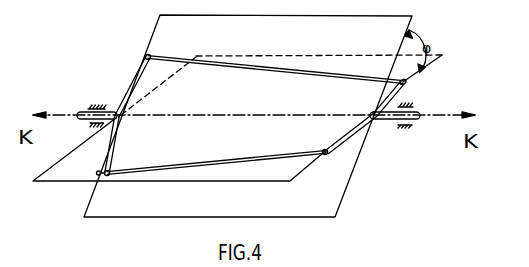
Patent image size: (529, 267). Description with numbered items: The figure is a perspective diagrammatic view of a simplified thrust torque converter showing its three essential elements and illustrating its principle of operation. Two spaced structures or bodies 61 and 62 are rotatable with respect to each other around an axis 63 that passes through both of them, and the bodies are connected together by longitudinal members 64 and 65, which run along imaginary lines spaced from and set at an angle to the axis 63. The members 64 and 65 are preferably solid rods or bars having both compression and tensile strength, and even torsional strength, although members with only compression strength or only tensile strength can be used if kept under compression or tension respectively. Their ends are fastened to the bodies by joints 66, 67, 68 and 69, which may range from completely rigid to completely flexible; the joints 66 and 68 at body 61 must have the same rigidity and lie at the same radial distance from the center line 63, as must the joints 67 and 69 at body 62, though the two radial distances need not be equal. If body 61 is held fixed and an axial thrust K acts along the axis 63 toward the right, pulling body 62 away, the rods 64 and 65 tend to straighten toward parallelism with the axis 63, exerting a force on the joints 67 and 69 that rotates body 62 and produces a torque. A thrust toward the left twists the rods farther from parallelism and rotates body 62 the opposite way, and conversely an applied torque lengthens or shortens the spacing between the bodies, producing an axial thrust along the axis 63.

The body 61 is at (116, 110).
The body 62 is at (382, 120).
The axis 63 is at (203, 114).
The longitudinal member 64 is at (240, 158).
The longitudinal member 65 is at (272, 70).
The joint 66 is at (112, 170).
The joint 67 is at (327, 149).
The joint 68 is at (150, 54).
The joint 69 is at (417, 78).